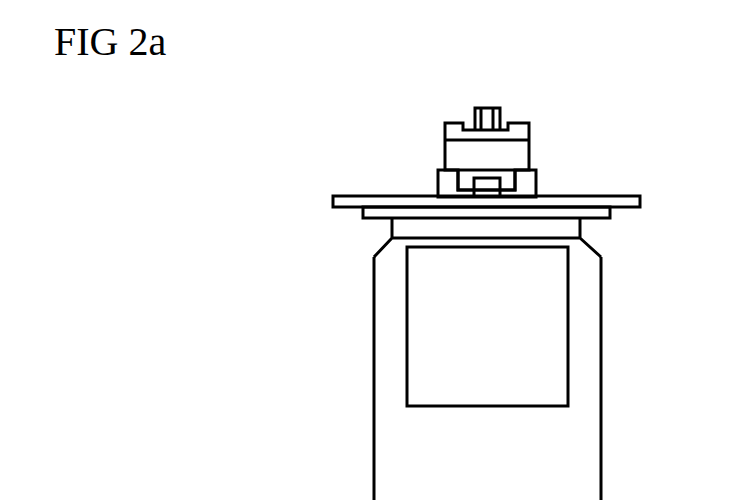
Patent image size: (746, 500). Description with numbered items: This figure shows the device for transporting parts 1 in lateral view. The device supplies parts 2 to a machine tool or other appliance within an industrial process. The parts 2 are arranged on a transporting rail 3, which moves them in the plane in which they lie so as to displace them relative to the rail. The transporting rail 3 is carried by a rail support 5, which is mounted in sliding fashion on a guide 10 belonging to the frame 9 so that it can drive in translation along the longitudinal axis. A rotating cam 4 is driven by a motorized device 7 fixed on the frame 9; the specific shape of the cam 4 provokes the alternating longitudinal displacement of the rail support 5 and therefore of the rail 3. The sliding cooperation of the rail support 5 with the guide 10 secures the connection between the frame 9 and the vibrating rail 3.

The device for transporting parts 1 is at (160, 257).
The parts 2 is at (493, 103).
The transporting rail 3 is at (535, 113).
The rotating cam 4 is at (542, 183).
The rail support 5 is at (469, 171).
The motorized device 7 is at (370, 413).
The frame 9 is at (345, 193).
The guide 10 is at (488, 190).